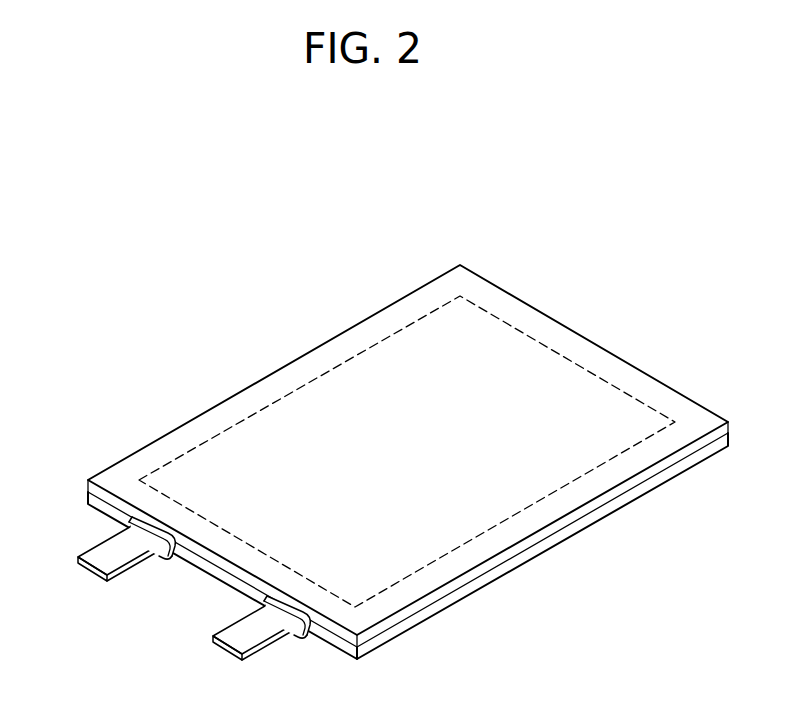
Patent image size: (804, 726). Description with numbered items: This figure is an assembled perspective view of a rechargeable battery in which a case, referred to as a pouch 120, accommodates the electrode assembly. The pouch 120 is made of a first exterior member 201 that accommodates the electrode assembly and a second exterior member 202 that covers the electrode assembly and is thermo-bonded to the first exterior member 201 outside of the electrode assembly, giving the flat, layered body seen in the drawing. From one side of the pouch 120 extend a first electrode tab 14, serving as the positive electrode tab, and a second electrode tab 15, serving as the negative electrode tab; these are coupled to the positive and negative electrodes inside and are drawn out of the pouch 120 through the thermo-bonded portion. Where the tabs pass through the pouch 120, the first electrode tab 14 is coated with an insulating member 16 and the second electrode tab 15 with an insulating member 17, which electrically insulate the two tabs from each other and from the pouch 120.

The first electrode tab 14 is at (98, 553).
The second electrode tab 15 is at (238, 641).
The insulating member 16 is at (152, 532).
The insulating member 17 is at (286, 608).
The pouch 120 is at (408, 468).
The first exterior member 201 is at (610, 612).
The second exterior member 202 is at (525, 545).